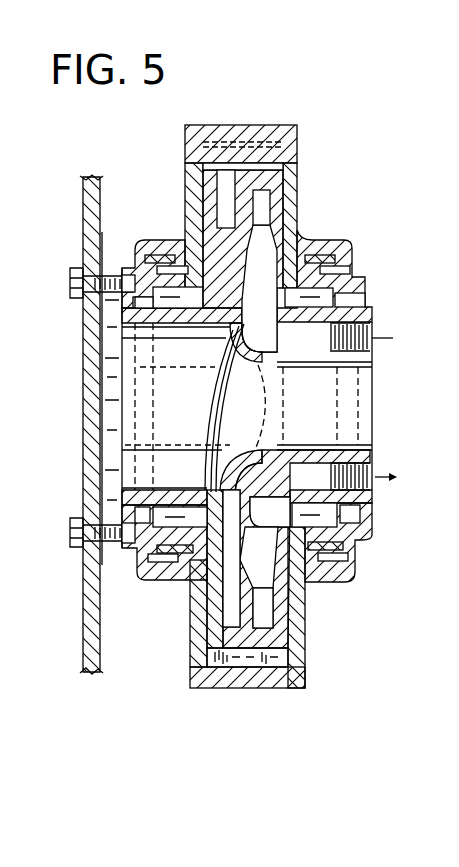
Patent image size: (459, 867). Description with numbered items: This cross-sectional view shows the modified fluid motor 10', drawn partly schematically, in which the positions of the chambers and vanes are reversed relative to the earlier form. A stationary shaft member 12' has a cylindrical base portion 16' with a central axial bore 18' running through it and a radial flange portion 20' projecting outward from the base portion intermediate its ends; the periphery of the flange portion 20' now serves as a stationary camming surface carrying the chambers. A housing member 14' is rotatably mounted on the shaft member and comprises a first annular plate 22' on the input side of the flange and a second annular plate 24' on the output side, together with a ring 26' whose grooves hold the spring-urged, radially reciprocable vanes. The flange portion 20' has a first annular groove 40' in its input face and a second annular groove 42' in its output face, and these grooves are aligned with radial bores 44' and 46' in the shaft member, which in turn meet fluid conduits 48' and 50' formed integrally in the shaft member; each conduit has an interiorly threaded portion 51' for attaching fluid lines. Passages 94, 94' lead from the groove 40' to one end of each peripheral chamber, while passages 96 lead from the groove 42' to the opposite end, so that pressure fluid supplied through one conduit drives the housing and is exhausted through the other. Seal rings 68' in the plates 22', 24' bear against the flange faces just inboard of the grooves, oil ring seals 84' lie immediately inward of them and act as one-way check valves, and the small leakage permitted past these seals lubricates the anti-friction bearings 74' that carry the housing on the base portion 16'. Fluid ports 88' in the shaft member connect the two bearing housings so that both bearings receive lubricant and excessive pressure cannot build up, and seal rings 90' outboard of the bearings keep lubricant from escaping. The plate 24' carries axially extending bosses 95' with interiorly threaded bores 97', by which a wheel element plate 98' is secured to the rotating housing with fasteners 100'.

The fluid motor 10' is at (357, 406).
The shaft member 12' is at (230, 408).
The housing member 14' is at (255, 381).
The base portion 16' is at (268, 400).
The axial bore 18' is at (176, 413).
The flange portion 20' is at (257, 420).
The first annular housing plate 22' is at (273, 415).
The second annular housing plate 24' is at (183, 415).
The ring 26' is at (241, 125).
The first annular groove 40' is at (297, 403).
The second annular groove 42' is at (192, 400).
The radial bore 44' is at (243, 257).
The radial bore 46' is at (288, 558).
The fluid conduit 48' is at (311, 377).
The fluid conduit 50' is at (311, 449).
The interiorly threaded portion 51' is at (378, 406).
The seal ring 68' is at (264, 409).
The anti-friction bearing 74' is at (279, 423).
The oil ring seal 84' is at (253, 419).
The fluid port 88' is at (266, 407).
The seal ring 90' is at (279, 402).
The passage 94 is at (258, 685).
The passage 94' is at (80, 408).
The boss 95' is at (78, 563).
The passage 96 is at (205, 170).
The interiorly threaded bore 97' is at (89, 398).
The wheel element plate 98' is at (70, 424).
The fastener 100' is at (74, 394).